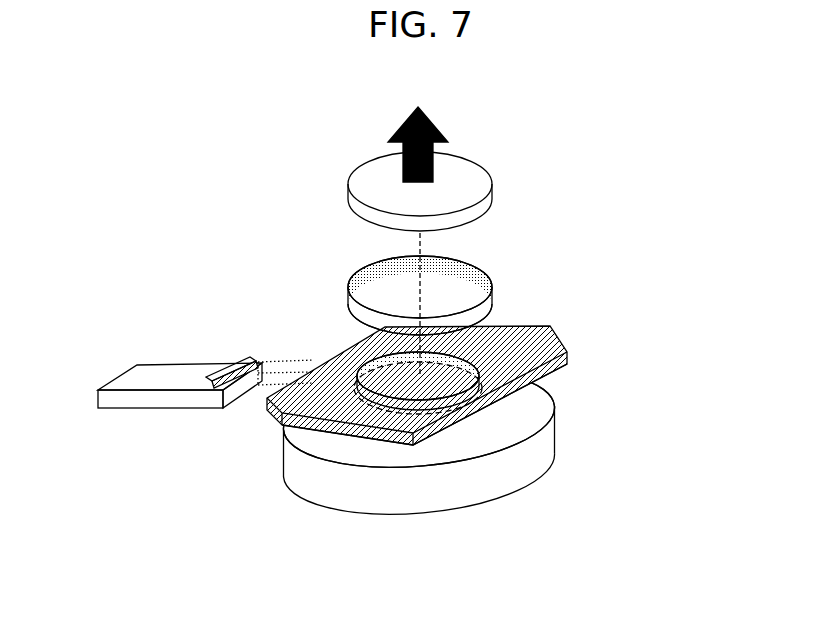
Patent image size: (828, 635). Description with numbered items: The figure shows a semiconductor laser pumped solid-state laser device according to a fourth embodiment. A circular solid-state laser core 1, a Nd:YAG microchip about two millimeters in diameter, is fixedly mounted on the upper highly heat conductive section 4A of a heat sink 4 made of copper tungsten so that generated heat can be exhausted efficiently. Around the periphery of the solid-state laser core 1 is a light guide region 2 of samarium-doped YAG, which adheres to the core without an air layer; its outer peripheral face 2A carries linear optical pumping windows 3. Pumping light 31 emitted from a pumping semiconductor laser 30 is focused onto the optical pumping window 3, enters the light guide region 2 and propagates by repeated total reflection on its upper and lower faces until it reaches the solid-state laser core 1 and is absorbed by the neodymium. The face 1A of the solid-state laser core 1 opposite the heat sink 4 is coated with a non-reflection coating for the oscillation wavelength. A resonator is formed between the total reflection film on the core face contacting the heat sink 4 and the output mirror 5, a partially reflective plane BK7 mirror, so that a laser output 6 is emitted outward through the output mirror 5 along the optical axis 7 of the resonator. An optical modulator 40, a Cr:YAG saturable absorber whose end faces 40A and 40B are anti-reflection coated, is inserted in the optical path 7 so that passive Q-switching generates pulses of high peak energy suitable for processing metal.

The solid-state laser core 1 is at (522, 325).
The face of the solid-state laser core 1A is at (395, 368).
The light guide region 2 is at (560, 342).
The outer peripheral face 2A is at (568, 365).
The optical pumping window 3 is at (517, 400).
The heat sink 4 is at (473, 480).
The upper highly heat conductive section 4A is at (432, 443).
The output mirror 5 is at (460, 172).
The laser output 6 is at (438, 130).
The optical axis 7 is at (415, 245).
The pumping semiconductor laser 30 is at (243, 362).
The pumping light 31 is at (257, 390).
The optical modulator 40 is at (353, 280).
The end face of the optical modulator 40A is at (467, 272).
The end face of the optical modulator 40B is at (492, 317).